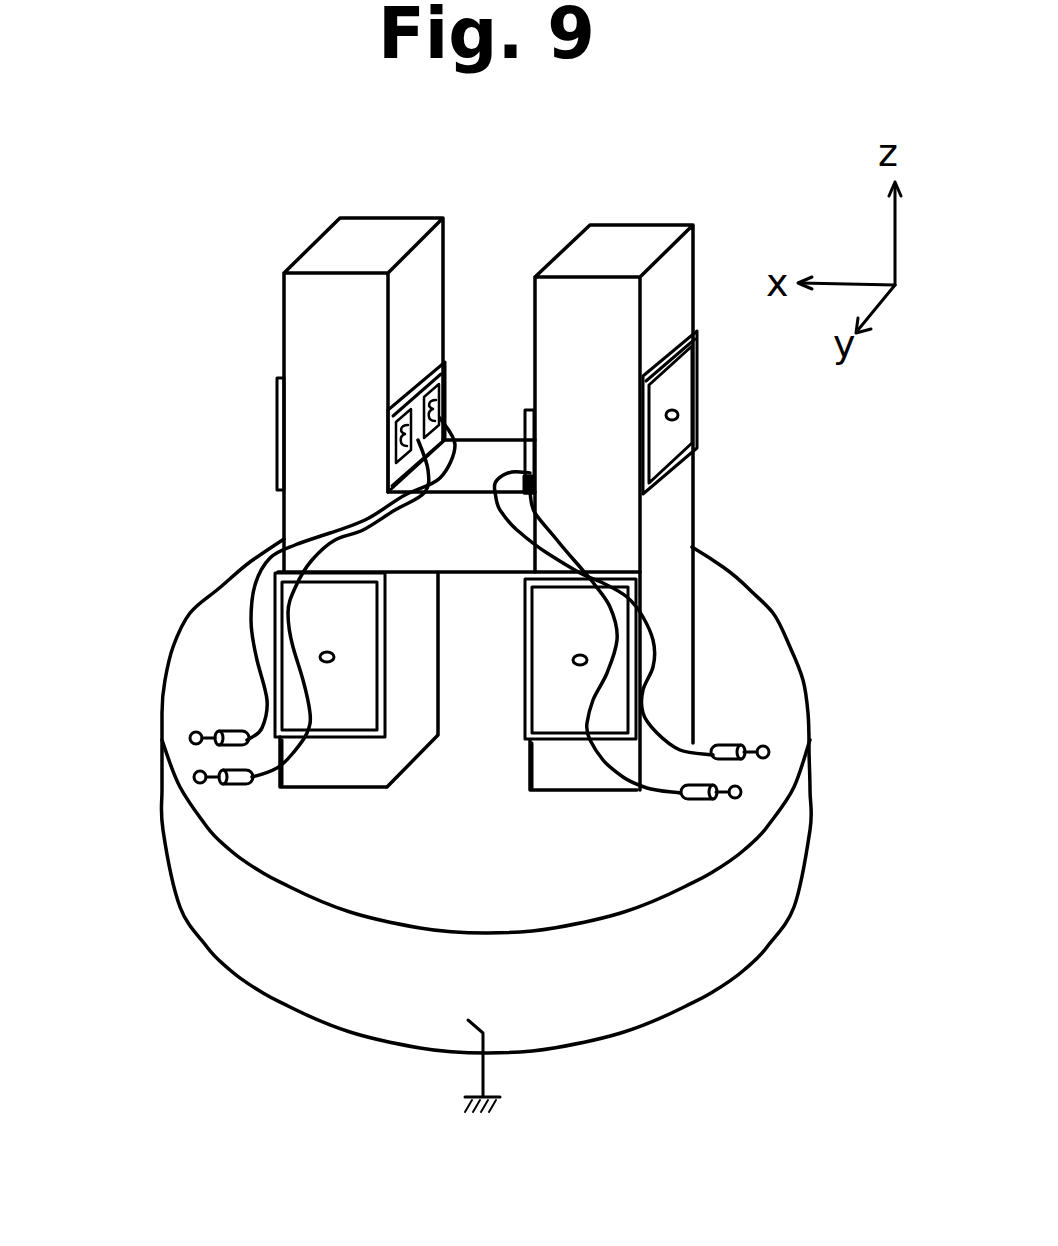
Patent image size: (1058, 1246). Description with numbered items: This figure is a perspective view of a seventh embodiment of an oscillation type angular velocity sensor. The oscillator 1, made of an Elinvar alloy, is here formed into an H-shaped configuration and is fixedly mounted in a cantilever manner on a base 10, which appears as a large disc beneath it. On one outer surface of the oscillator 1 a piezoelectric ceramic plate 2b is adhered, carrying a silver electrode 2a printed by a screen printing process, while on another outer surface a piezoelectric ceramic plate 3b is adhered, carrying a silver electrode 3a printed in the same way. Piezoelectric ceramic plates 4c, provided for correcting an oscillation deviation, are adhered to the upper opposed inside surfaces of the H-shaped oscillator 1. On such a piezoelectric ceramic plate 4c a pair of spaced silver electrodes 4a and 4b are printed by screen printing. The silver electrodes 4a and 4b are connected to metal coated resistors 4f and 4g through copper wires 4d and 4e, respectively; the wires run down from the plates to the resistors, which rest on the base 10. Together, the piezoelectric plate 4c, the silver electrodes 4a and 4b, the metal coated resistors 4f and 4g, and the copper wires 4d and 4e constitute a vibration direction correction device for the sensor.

The oscillator 1 is at (283, 518).
The silver electrode 2a is at (277, 440).
The piezoelectric ceramic plate 2b is at (280, 380).
The silver electrode 3a is at (552, 693).
The piezoelectric ceramic plate 3b is at (570, 740).
The silver electrode 4a is at (410, 413).
The silver electrode 4b is at (447, 365).
The piezoelectric ceramic plate 4c is at (530, 412).
The copper wire 4d is at (265, 765).
The copper wire 4e is at (250, 623).
The metal coated resistor 4f is at (228, 730).
The metal coated resistor 4g is at (235, 787).
The base 10 is at (797, 817).